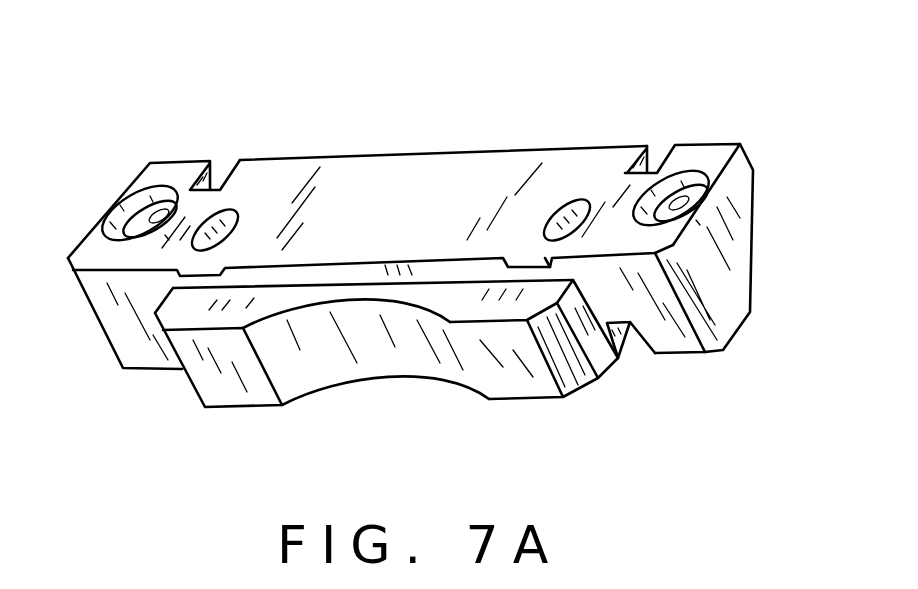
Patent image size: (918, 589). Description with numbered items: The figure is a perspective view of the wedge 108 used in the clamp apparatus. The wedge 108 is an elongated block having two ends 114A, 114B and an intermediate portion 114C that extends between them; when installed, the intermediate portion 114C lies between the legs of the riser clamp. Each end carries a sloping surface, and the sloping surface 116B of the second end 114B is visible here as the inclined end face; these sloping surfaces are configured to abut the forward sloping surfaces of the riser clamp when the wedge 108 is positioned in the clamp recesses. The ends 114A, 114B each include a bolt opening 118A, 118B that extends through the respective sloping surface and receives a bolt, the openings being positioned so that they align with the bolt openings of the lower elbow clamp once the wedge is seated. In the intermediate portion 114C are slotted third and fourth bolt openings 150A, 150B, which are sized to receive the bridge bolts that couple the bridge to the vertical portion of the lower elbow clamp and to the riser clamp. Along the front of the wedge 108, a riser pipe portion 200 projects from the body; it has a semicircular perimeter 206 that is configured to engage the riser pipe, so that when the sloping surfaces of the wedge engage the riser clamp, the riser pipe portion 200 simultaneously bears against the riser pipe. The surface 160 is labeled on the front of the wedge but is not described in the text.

The wedge 108 is at (441, 230).
The wedge end 114A is at (147, 173).
The wedge end 114B is at (723, 157).
The intermediate portion 114C is at (393, 185).
The sloping surface 116B is at (752, 230).
The bolt opening 118A is at (177, 202).
The bolt opening 118B is at (683, 205).
The slotted third bolt opening 150A is at (228, 215).
The slotted fourth bolt opening 150B is at (574, 197).
The front surface 160 is at (120, 337).
The riser pipe portion 200 is at (225, 390).
The semicircular perimeter 206 is at (367, 357).